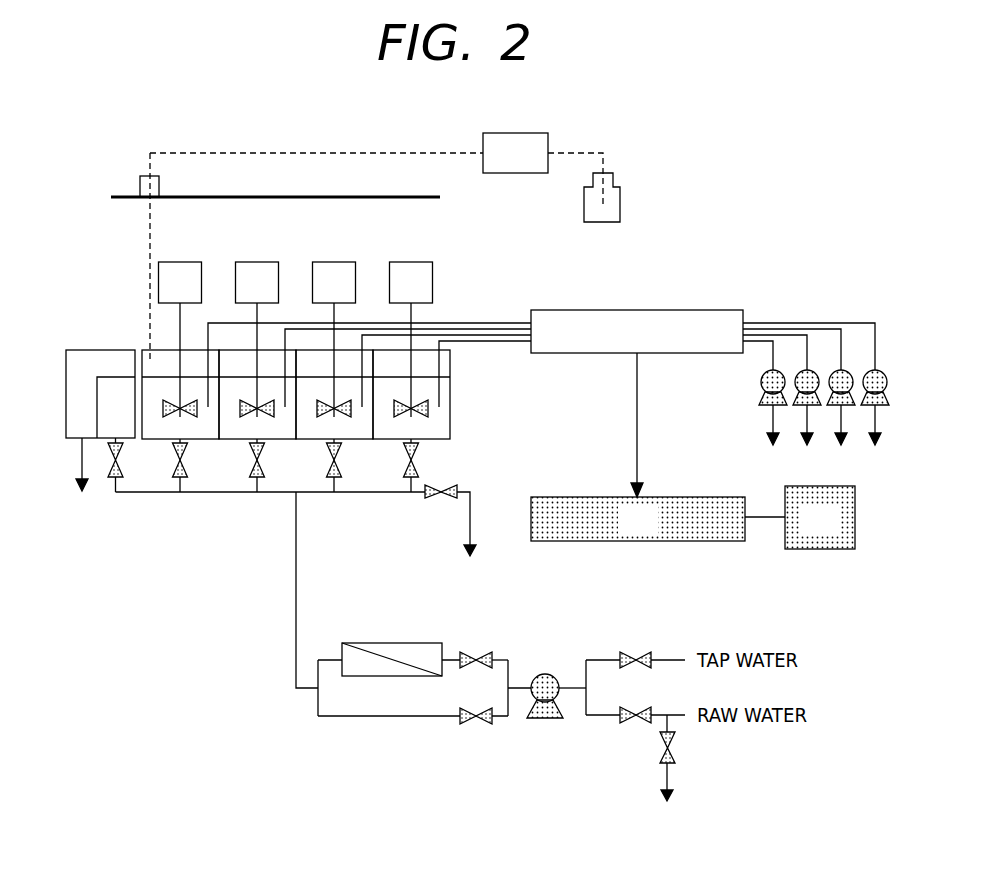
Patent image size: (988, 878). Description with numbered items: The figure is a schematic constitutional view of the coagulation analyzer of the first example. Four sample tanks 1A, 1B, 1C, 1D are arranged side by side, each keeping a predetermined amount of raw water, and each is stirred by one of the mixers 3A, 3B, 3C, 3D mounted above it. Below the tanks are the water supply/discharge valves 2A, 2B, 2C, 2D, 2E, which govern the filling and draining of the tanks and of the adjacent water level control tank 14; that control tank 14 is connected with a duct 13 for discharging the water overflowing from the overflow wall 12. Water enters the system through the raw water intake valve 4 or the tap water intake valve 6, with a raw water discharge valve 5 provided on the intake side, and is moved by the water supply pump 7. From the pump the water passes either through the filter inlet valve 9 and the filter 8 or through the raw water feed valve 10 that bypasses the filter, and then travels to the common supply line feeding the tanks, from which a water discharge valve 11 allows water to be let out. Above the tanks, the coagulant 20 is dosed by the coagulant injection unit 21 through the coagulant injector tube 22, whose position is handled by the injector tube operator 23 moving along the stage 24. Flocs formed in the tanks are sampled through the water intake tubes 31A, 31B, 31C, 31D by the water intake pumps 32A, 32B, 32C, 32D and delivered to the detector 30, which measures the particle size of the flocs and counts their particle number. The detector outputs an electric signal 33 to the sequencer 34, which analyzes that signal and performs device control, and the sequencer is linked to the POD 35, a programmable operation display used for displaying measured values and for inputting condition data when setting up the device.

The sample tank 1A is at (147, 348).
The sample tank 1B is at (257, 394).
The sample tank 1C is at (334, 394).
The sample tank 1D is at (411, 394).
The water supply/discharge valve 2A is at (187, 480).
The water supply/discharge valve 2B is at (248, 462).
The water supply/discharge valve 2C is at (330, 460).
The water supply/discharge valve 2D is at (408, 460).
The water supply/discharge valve 2E is at (122, 462).
The mixer 3A is at (180, 325).
The mixer 3B is at (257, 325).
The mixer 3C is at (334, 325).
The mixer 3D is at (411, 325).
The raw water intake valve 4 is at (637, 722).
The raw water discharge valve 5 is at (673, 748).
The tap water intake valve 6 is at (635, 652).
The water supply pump 7 is at (545, 674).
The filter 8 is at (397, 643).
The filter inlet valve 9 is at (473, 652).
The raw water feed valve 10 is at (473, 722).
The water discharge valve 11 is at (440, 500).
The overflow wall 12 is at (100, 377).
The duct 13 is at (79, 480).
The water level control tank 14 is at (110, 350).
The coagulant 20 is at (620, 200).
The coagulant injection unit 21 is at (515, 153).
The coagulant injector tube 22 is at (220, 152).
The injector tube operator 23 is at (140, 180).
The stage 24 is at (440, 197).
The detector 30 is at (637, 331).
The water intake tube 31A is at (488, 320).
The water intake tube 31B is at (408, 368).
The water intake tube 31C is at (446, 371).
The water intake tube 31D is at (485, 374).
The water intake pump 32A is at (760, 385).
The water intake pump 32B is at (782, 390).
The water intake pump 32C is at (799, 387).
The water intake pump 32D is at (816, 384).
The electric signal 33 is at (637, 433).
The sequencer 34 is at (638, 519).
The POD (programmable operation display) 35 is at (820, 517).